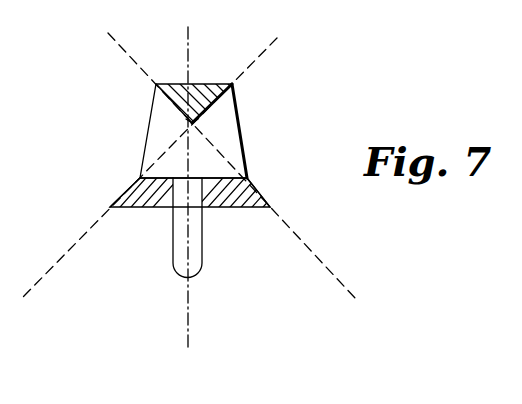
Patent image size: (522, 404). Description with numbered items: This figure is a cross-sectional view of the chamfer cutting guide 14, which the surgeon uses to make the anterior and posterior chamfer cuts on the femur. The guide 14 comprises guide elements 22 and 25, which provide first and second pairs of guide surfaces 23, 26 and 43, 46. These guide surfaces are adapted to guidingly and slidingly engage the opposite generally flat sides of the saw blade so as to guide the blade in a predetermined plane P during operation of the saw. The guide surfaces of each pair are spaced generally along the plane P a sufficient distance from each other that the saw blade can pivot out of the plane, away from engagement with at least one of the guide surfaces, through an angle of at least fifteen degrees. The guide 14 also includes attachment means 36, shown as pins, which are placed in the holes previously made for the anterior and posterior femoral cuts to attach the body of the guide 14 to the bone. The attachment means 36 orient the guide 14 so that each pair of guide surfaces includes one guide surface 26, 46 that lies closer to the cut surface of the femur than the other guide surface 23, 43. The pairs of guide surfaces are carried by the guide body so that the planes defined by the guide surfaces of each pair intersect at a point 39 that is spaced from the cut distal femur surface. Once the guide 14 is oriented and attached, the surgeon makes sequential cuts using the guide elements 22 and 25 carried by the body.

The chamfer cutting guide 14 is at (257, 236).
The guide element 22 is at (197, 100).
The guide surface 23 is at (181, 96).
The point 39 is at (192, 123).
The guide surface 43 is at (213, 97).
The guide surface 46 is at (121, 195).
The guide surface 26 is at (255, 188).
The guide element 25 is at (157, 193).
The attachment means 36 is at (192, 253).
The plane P is at (130, 55).